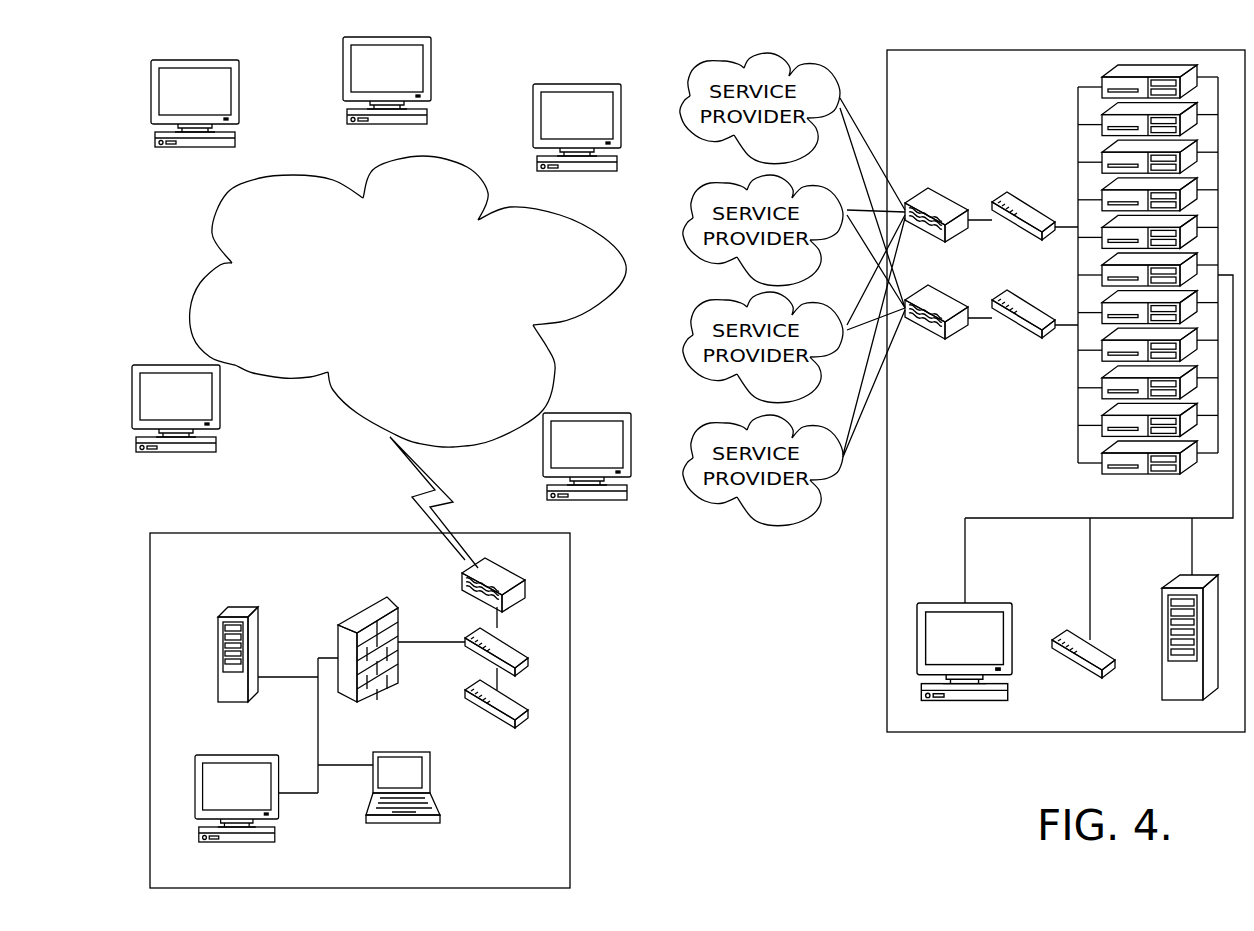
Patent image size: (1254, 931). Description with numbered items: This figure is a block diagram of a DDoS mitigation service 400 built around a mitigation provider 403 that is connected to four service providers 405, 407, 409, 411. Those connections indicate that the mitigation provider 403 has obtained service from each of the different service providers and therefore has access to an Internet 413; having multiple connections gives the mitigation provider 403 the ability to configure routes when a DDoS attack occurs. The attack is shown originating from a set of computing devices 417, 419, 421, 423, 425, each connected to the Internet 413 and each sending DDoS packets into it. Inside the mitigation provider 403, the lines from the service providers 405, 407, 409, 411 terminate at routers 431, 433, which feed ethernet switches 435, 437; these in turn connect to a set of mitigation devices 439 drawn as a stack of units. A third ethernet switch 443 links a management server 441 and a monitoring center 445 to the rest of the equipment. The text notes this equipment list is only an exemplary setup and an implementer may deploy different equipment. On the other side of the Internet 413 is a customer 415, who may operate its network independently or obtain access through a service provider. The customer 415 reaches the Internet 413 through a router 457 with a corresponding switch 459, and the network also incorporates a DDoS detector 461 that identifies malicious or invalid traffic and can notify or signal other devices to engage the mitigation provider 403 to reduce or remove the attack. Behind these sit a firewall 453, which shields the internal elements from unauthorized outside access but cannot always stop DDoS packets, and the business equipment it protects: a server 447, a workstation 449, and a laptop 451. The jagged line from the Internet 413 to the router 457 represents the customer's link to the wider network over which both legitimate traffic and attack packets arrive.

The DDoS mitigation service 400 is at (826, 786).
The mitigation provider 403 is at (1065, 742).
The service provider 405 is at (815, 72).
The service provider 407 is at (683, 245).
The service provider 409 is at (683, 363).
The service provider 411 is at (785, 527).
The Internet 413 is at (203, 227).
The customer 415 is at (570, 705).
The computing device 417 is at (623, 115).
The computing device 419 is at (455, 64).
The computing device 421 is at (240, 92).
The computing device 423 is at (187, 363).
The computing device 425 is at (632, 460).
The router 431 is at (953, 200).
The router 433 is at (953, 300).
The ethernet switch 435 is at (1033, 200).
The ethernet switch 437 is at (1033, 300).
The set of mitigation devices 439 is at (1163, 476).
The management server 441 is at (1190, 703).
The ethernet switch 443 is at (1107, 648).
The monitoring center 445 is at (1013, 613).
The server 447 is at (252, 607).
The workstation 449 is at (237, 753).
The laptop 451 is at (400, 752).
The firewall 453 is at (380, 600).
The router 457 is at (530, 598).
The switch 459 is at (528, 662).
The DDoS detector 461 is at (523, 723).